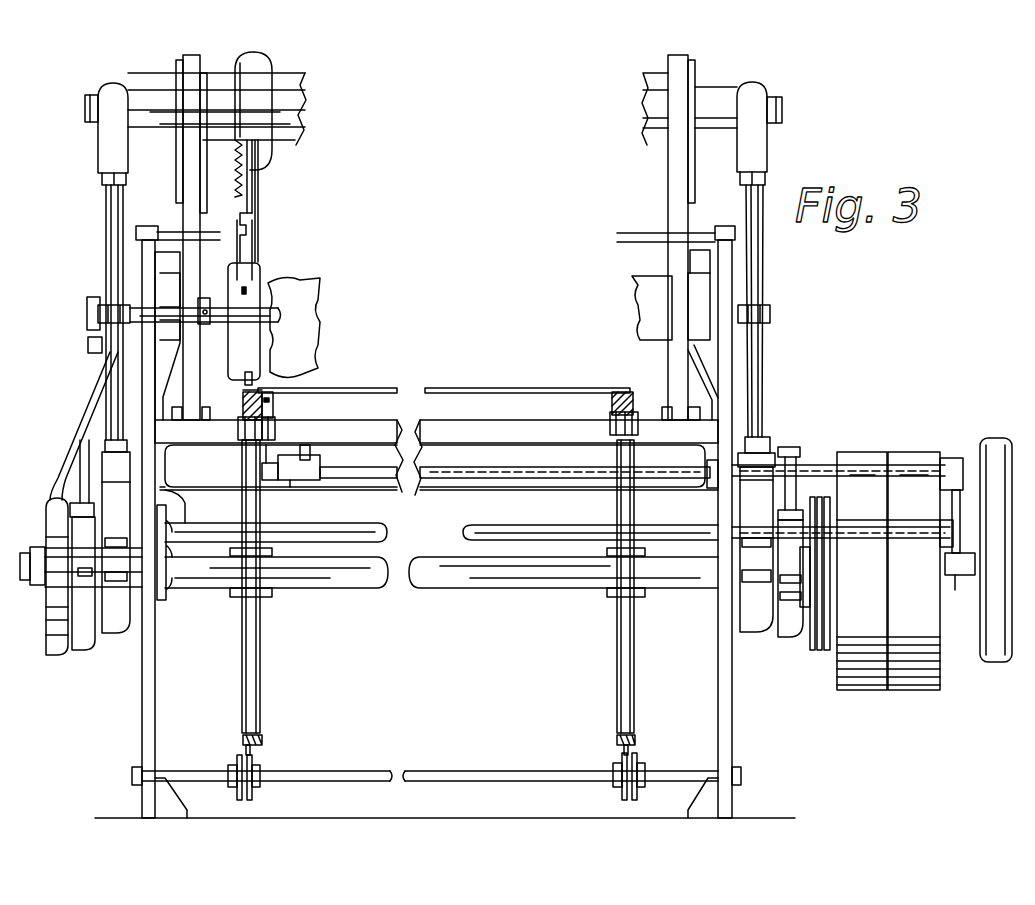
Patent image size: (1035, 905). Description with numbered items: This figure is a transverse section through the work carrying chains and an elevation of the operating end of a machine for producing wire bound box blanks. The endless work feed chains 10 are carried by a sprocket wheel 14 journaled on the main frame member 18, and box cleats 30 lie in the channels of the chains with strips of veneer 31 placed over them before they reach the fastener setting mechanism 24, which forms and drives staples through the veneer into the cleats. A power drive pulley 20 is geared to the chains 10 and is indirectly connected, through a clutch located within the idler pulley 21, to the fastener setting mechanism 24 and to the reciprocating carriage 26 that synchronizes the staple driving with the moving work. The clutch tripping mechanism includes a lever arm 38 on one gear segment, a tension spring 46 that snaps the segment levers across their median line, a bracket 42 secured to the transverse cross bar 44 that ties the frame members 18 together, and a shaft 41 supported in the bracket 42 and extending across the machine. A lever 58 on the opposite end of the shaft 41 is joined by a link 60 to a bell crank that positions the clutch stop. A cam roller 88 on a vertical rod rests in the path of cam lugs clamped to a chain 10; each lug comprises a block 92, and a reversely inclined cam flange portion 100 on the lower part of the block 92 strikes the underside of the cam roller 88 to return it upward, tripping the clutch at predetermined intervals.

The work feed chains 10 is at (240, 416).
The sprocket wheel 14 is at (262, 670).
The frame member 18 is at (142, 695).
The power drive pulley 20 is at (843, 690).
The idler pulley 21 is at (923, 690).
The fastener setting mechanism 24 is at (268, 278).
The carriage 26 is at (298, 356).
The box cleats 30 is at (245, 401).
The strips of veneer 31 is at (485, 390).
The lever arm 38 is at (265, 489).
The shaft 41 is at (462, 480).
The bracket 42 is at (318, 468).
The transverse cross bar 44 is at (375, 485).
The tension spring 46 is at (262, 470).
The lever 58 is at (958, 470).
The link 60 is at (968, 575).
The cam roller 88 is at (275, 437).
The block 92 is at (262, 389).
The cam flange portion 100 is at (273, 414).